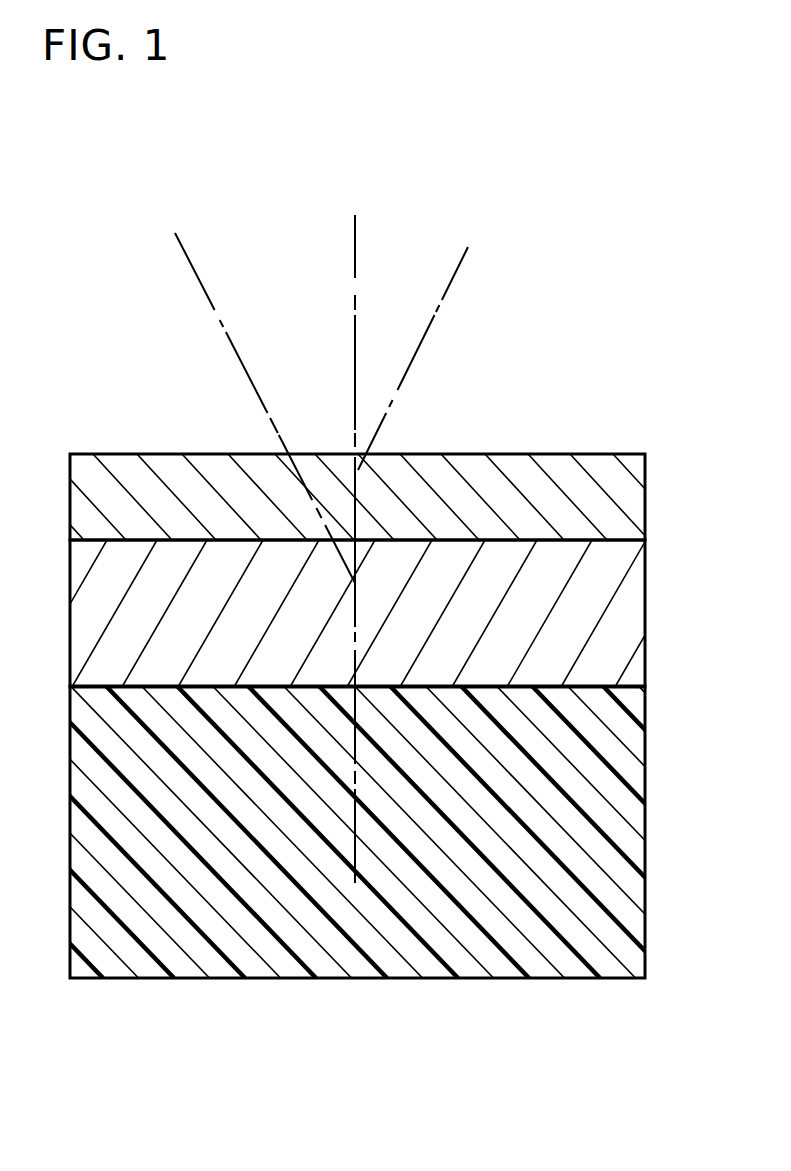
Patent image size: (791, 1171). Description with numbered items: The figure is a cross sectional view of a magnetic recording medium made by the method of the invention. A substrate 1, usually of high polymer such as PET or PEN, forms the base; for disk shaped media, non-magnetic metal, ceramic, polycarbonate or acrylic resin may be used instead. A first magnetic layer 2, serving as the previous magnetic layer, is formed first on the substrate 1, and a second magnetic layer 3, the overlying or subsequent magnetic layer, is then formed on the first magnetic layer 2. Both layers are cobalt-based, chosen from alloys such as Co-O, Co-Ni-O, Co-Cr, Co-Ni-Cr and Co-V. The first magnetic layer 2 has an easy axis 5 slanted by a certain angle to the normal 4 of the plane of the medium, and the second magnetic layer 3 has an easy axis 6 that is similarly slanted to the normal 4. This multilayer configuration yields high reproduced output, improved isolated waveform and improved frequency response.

The substrate 1 is at (625, 798).
The first magnetic layer 2 is at (618, 621).
The second magnetic layer 3 is at (632, 492).
The normal 4 is at (357, 268).
The easy axis 5 is at (192, 269).
The easy axis 6 is at (438, 304).